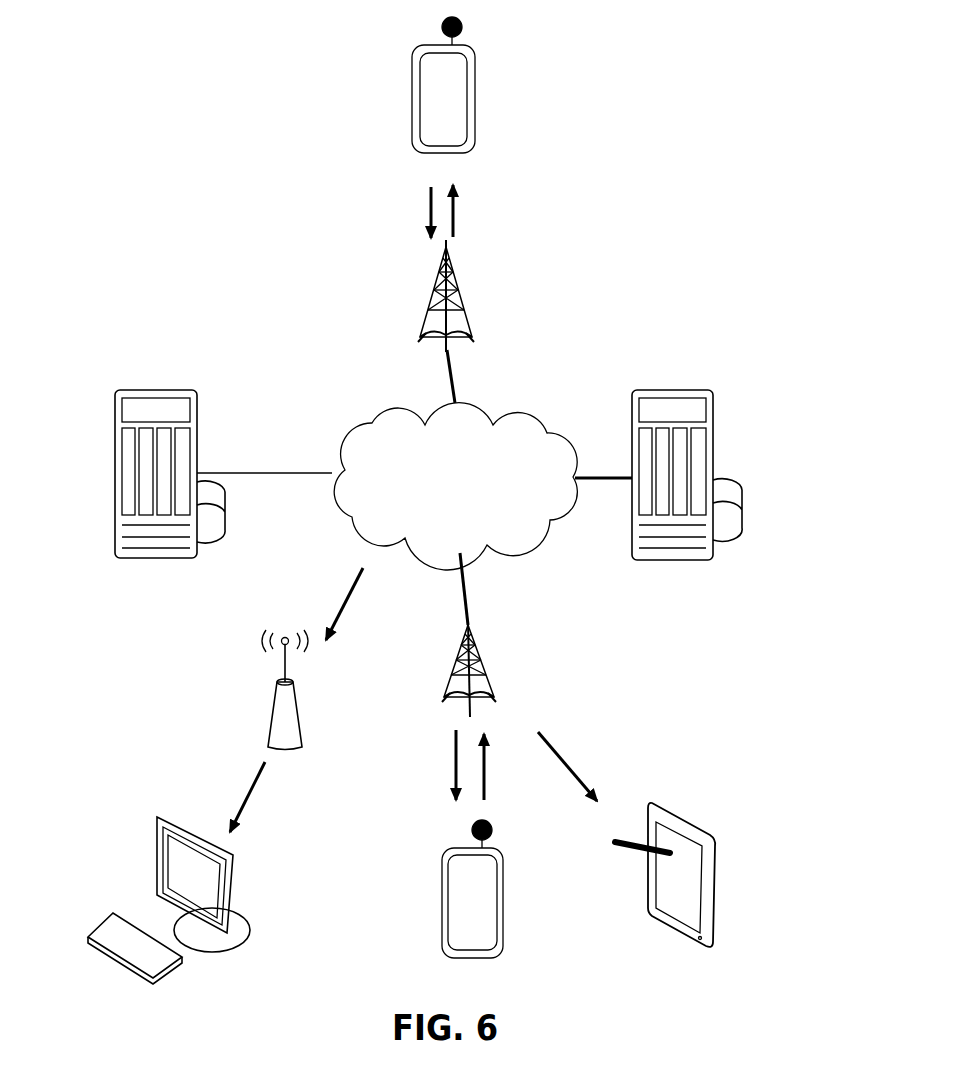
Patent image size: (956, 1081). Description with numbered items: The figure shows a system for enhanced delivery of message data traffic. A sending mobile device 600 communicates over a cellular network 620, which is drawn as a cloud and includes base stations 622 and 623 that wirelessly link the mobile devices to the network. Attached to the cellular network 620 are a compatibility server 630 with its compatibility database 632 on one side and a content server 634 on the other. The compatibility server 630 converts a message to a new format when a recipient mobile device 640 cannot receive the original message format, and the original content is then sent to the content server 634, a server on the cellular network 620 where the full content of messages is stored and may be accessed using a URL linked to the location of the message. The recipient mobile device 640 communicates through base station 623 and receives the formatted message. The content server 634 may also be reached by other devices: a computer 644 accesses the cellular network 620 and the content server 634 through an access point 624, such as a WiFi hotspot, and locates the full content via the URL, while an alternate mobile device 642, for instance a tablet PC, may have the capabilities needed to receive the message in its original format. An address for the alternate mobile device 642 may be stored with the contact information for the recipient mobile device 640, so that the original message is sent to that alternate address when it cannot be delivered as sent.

The sending mobile device 600 is at (376, 85).
The cellular network 620 is at (409, 470).
The base station 622 is at (387, 321).
The base station 623 is at (524, 635).
The access point 624 is at (222, 690).
The compatibility server 630 is at (718, 449).
The compatibility database 632 is at (759, 497).
The content server 634 is at (146, 438).
The recipient mobile device 640 is at (405, 889).
The alternate mobile device 642 is at (711, 855).
The computer 644 is at (158, 881).